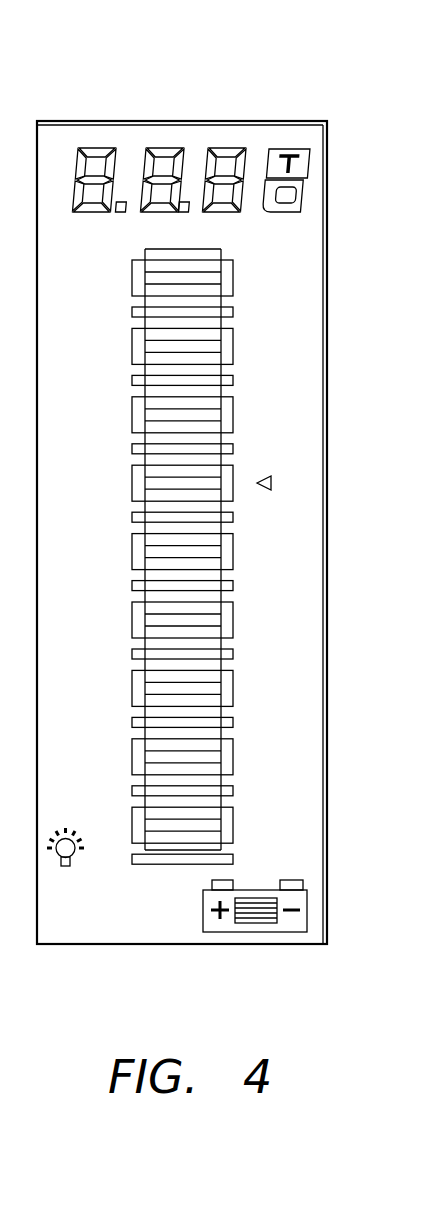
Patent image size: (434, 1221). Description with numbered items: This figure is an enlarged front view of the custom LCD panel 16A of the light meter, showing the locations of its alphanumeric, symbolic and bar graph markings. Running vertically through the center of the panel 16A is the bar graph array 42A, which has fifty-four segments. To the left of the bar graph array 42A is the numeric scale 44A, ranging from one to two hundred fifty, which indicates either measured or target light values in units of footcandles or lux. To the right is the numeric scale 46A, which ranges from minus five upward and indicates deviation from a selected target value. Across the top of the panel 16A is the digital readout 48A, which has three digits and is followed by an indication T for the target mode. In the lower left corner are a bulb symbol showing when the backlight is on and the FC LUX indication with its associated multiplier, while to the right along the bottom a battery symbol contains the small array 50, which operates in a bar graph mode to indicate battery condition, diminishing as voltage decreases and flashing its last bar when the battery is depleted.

The custom LCD panel 16A is at (90, 56).
The bar graph array 42A is at (180, 840).
The numeric scale 44A is at (60, 252).
The numeric scale 46A is at (303, 270).
The digital readout 48A is at (197, 135).
The small array 50 is at (292, 921).